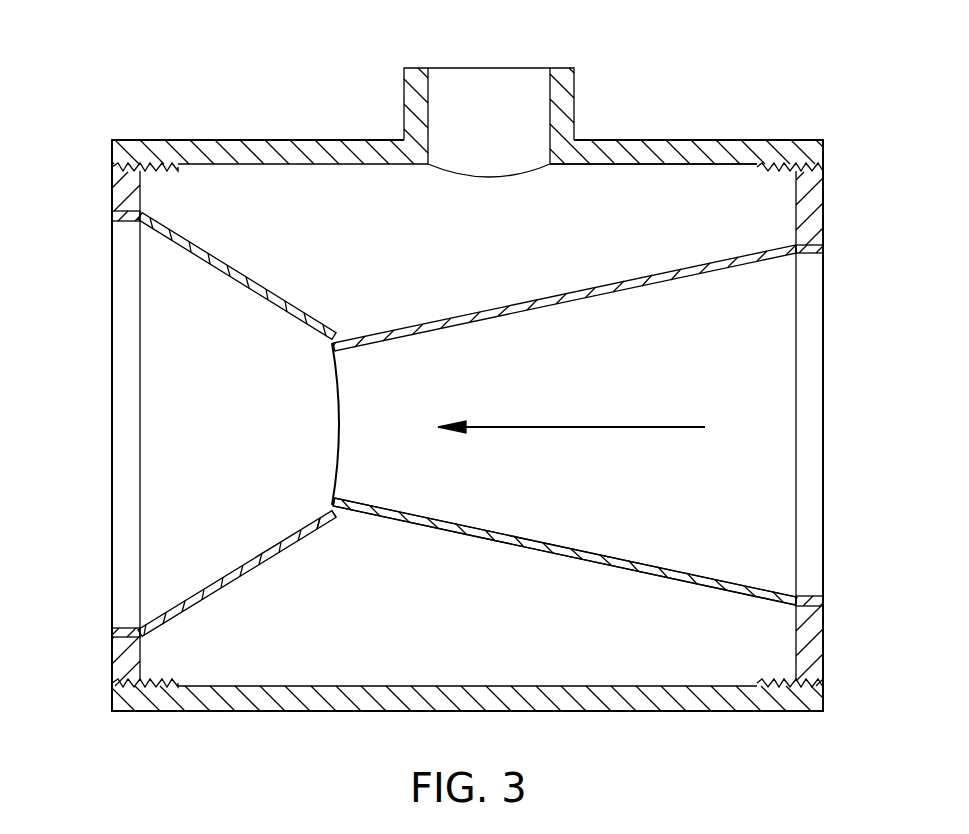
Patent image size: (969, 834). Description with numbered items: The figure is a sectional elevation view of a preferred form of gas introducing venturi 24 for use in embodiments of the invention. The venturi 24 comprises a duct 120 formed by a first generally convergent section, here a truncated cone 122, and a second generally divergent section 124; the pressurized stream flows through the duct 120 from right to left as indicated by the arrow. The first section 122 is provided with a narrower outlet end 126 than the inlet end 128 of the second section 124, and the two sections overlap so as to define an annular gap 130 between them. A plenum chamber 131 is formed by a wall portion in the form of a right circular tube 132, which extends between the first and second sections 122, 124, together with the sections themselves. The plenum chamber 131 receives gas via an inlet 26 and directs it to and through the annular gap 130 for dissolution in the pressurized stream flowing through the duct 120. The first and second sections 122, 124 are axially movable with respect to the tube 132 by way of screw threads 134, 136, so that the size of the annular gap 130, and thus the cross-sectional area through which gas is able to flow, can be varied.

The venturi 24 is at (386, 714).
The inlet 26 is at (488, 83).
The duct 120 is at (705, 562).
The truncated cone 122 is at (748, 598).
The second generally divergent section 124 is at (252, 580).
The outlet end 126 is at (332, 424).
The inlet end 128 is at (338, 337).
The annular gap 130 is at (338, 513).
The plenum chamber 131 is at (474, 256).
The right circular tube 132 is at (612, 166).
The screw thread 134 is at (823, 164).
The screw thread 136 is at (112, 165).